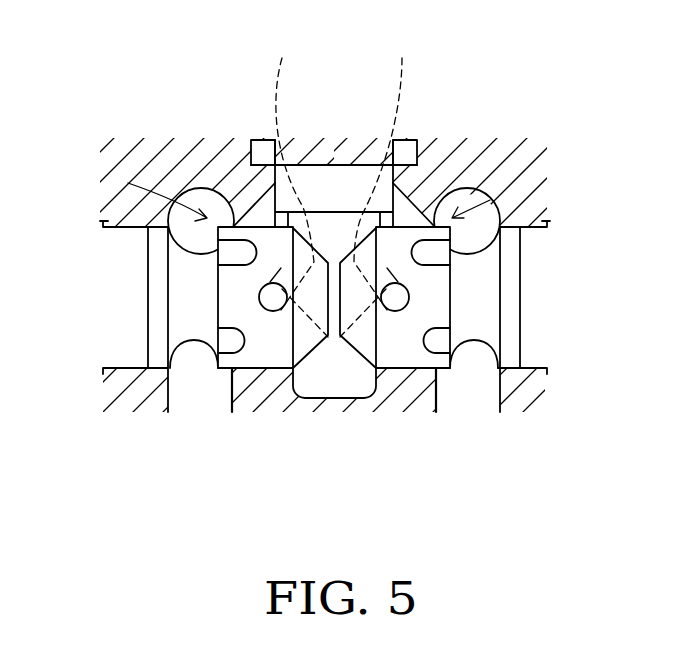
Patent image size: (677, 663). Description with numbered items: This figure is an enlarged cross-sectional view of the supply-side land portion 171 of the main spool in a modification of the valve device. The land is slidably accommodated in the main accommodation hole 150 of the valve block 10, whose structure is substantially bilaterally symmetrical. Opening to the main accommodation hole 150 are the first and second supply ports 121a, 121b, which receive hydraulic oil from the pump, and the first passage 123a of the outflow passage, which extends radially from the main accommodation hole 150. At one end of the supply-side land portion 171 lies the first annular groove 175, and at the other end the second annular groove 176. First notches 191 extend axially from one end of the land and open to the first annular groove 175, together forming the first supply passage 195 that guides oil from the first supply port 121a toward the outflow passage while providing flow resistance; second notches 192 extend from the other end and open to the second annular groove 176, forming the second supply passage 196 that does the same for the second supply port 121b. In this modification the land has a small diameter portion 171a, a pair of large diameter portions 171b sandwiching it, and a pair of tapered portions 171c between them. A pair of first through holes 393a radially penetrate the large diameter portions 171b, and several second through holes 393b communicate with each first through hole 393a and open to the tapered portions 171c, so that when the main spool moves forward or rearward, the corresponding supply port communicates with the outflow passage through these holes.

The valve block 10 is at (121, 152).
The first passage 123a is at (253, 167).
The tapered portions 171c is at (398, 146).
The second through holes 393b is at (355, 181).
The small diameter portion 171a is at (339, 262).
The second supply passage 196 is at (128, 183).
The second annular groove 176 is at (190, 237).
The first supply passage 195 is at (490, 200).
The first annular groove 175 is at (463, 225).
The main accommodation hole 150 is at (531, 228).
The second notches 192 is at (225, 343).
The first notches 191 is at (437, 342).
The second supply port 121b is at (233, 390).
The large diameter portions 171b is at (410, 367).
The first through holes 393a is at (398, 303).
The first supply port 121a is at (436, 388).
The supply-side land portion 171 is at (453, 358).